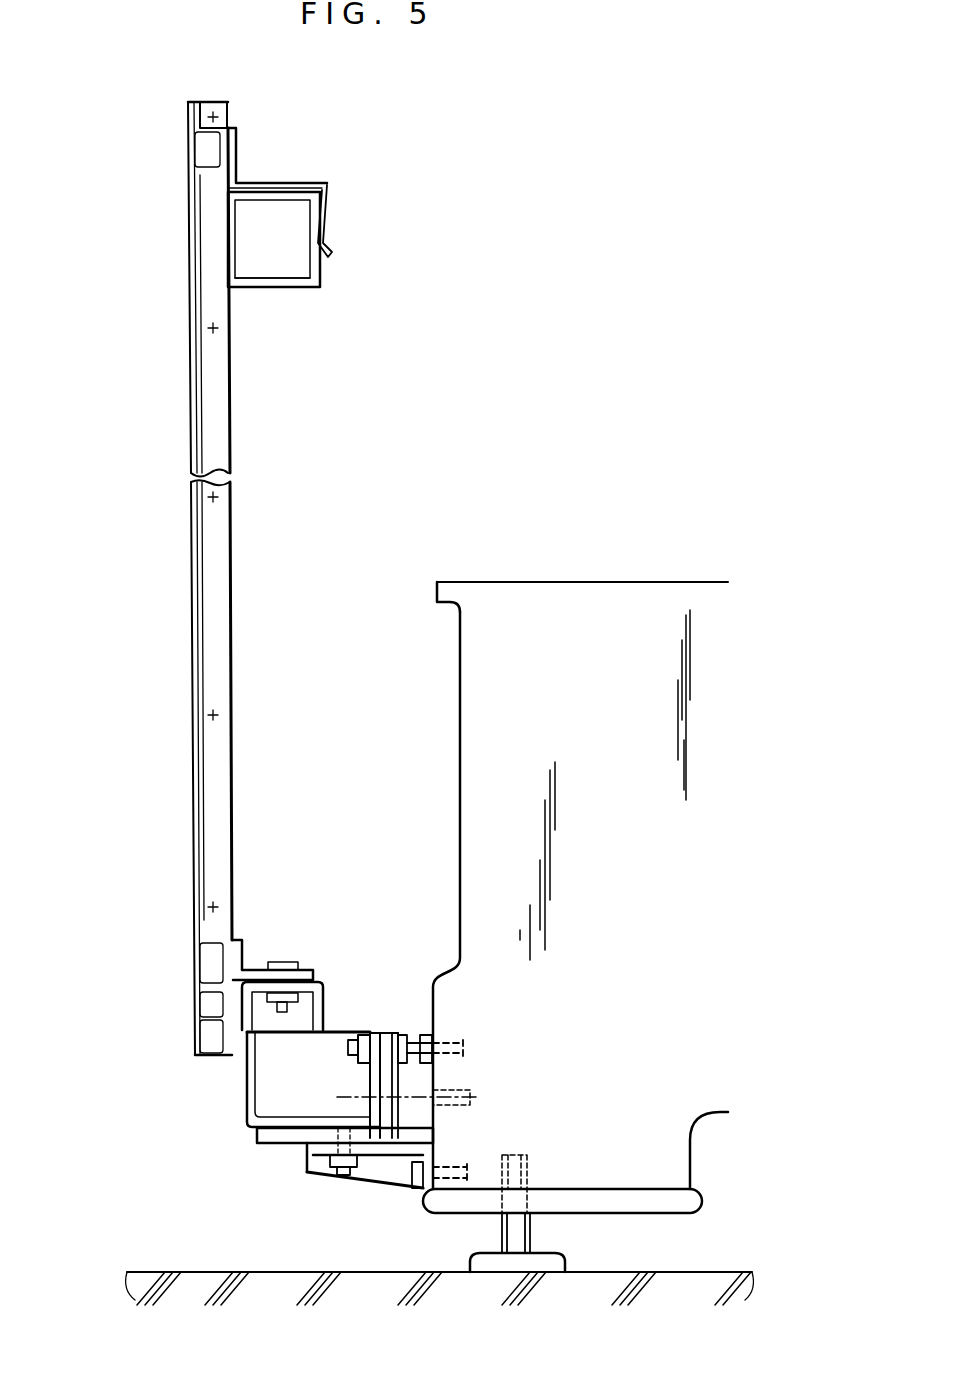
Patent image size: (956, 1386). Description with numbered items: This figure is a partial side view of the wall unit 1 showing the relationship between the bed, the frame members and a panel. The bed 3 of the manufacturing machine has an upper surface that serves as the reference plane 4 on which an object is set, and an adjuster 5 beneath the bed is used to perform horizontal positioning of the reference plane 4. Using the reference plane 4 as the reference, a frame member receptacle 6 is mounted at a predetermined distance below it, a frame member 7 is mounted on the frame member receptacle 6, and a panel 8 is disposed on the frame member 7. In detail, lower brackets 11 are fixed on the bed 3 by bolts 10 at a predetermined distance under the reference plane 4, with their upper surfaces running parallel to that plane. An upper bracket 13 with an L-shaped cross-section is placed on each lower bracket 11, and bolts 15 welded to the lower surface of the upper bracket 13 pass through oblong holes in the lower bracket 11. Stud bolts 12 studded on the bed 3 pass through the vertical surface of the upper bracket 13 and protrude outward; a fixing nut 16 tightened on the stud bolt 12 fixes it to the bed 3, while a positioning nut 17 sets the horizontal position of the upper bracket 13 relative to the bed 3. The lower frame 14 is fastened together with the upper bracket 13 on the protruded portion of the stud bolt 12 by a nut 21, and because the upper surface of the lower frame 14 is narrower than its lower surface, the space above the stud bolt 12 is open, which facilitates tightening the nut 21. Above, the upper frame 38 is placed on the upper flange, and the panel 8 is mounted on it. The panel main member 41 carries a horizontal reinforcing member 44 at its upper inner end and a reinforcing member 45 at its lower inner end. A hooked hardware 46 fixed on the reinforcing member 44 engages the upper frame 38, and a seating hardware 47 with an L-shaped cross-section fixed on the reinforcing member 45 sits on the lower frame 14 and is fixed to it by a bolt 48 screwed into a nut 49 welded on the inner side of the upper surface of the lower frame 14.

The wall unit 1 is at (66, 308).
The bed 3 is at (500, 698).
The reference plane 4 is at (610, 582).
The adjuster 5 is at (510, 1227).
The frame member receptacle 6 is at (304, 1172).
The frame member 7 is at (322, 267).
The panel 8 is at (189, 455).
The bolt 10 is at (398, 1186).
The lower bracket 11 is at (307, 1147).
The stud bolt 12 is at (470, 1048).
The upper bracket 13 is at (383, 1033).
The lower frame 14 is at (247, 1062).
The bolt 15 is at (340, 1173).
The fixing nut 16 is at (425, 1033).
The positioning nut 17 is at (402, 1033).
The nut 21 is at (362, 1033).
The upper frame 38 is at (283, 288).
The panel main member 41 is at (190, 383).
The reinforcing member 44 is at (220, 123).
The reinforcing member 45 is at (215, 937).
The hooked hardware 46 is at (327, 188).
The seating hardware 47 is at (308, 970).
The bolt 48 is at (272, 963).
The nut 49 is at (263, 998).